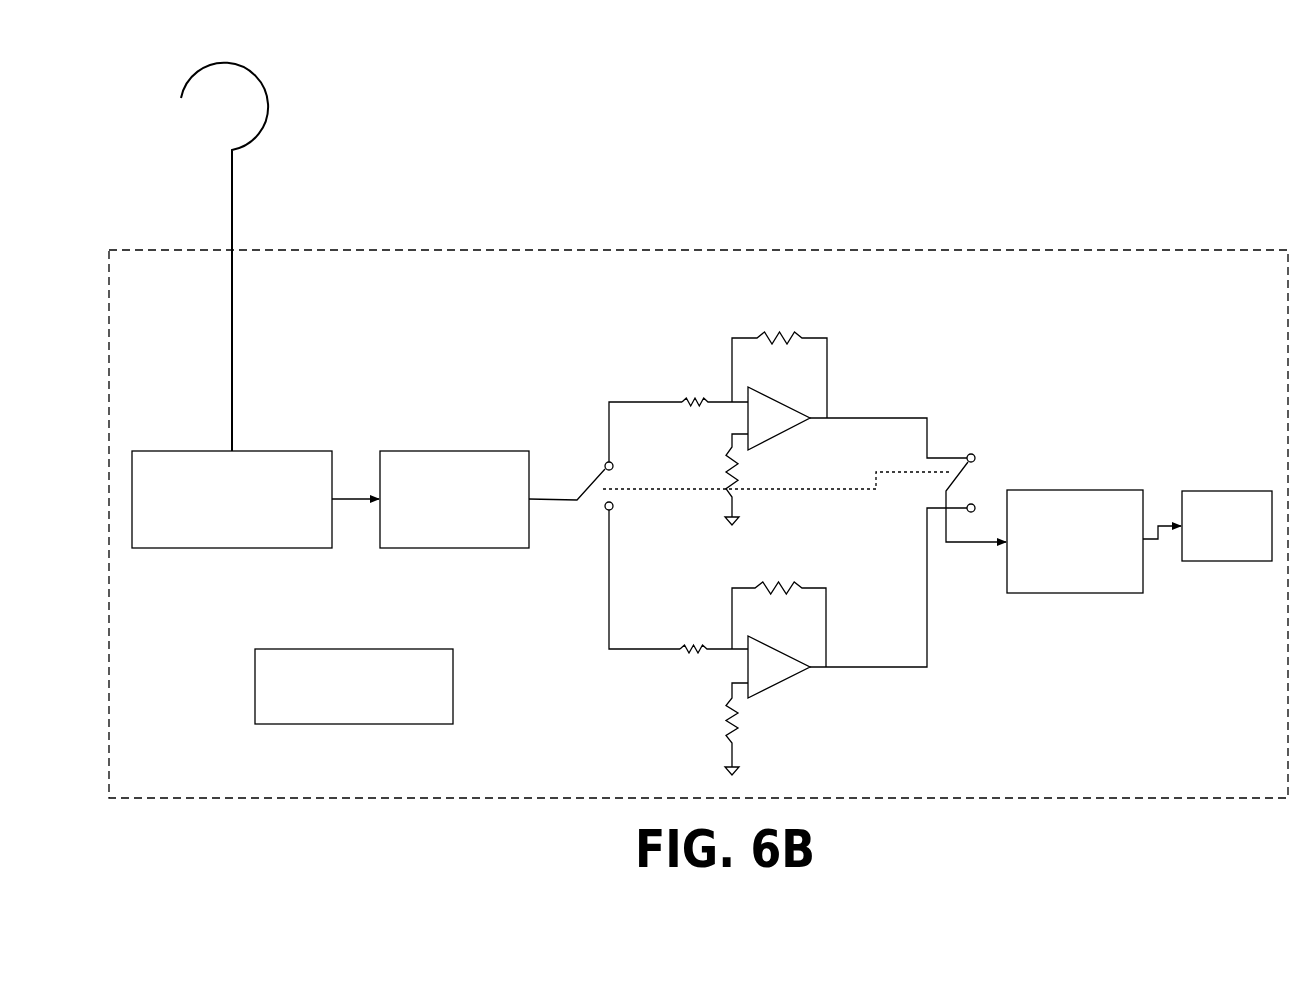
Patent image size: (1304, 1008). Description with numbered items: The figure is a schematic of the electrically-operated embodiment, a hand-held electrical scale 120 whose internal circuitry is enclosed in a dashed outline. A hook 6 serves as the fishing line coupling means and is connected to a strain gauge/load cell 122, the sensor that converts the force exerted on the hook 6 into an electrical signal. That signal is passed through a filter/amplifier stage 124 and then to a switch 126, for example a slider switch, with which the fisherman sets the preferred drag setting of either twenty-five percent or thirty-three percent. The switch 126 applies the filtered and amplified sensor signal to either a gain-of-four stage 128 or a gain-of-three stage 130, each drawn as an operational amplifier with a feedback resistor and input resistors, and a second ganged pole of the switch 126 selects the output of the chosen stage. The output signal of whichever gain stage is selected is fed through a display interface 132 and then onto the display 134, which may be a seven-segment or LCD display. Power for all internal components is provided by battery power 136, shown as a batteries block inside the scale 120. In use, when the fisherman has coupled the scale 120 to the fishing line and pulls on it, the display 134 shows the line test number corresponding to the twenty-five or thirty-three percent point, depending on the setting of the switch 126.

The hook 6 is at (268, 88).
The hand-held electrical scale 120 is at (1028, 225).
The strain gauge/load cell 122 is at (232, 548).
The filter/amplifier stage 124 is at (453, 548).
The switch 126 is at (583, 463).
The gain-of-four stage 128 is at (808, 318).
The gain-of-three stage 130 is at (800, 700).
The display interface 132 is at (1075, 489).
The display 134 is at (1227, 490).
The battery power 136 is at (455, 689).